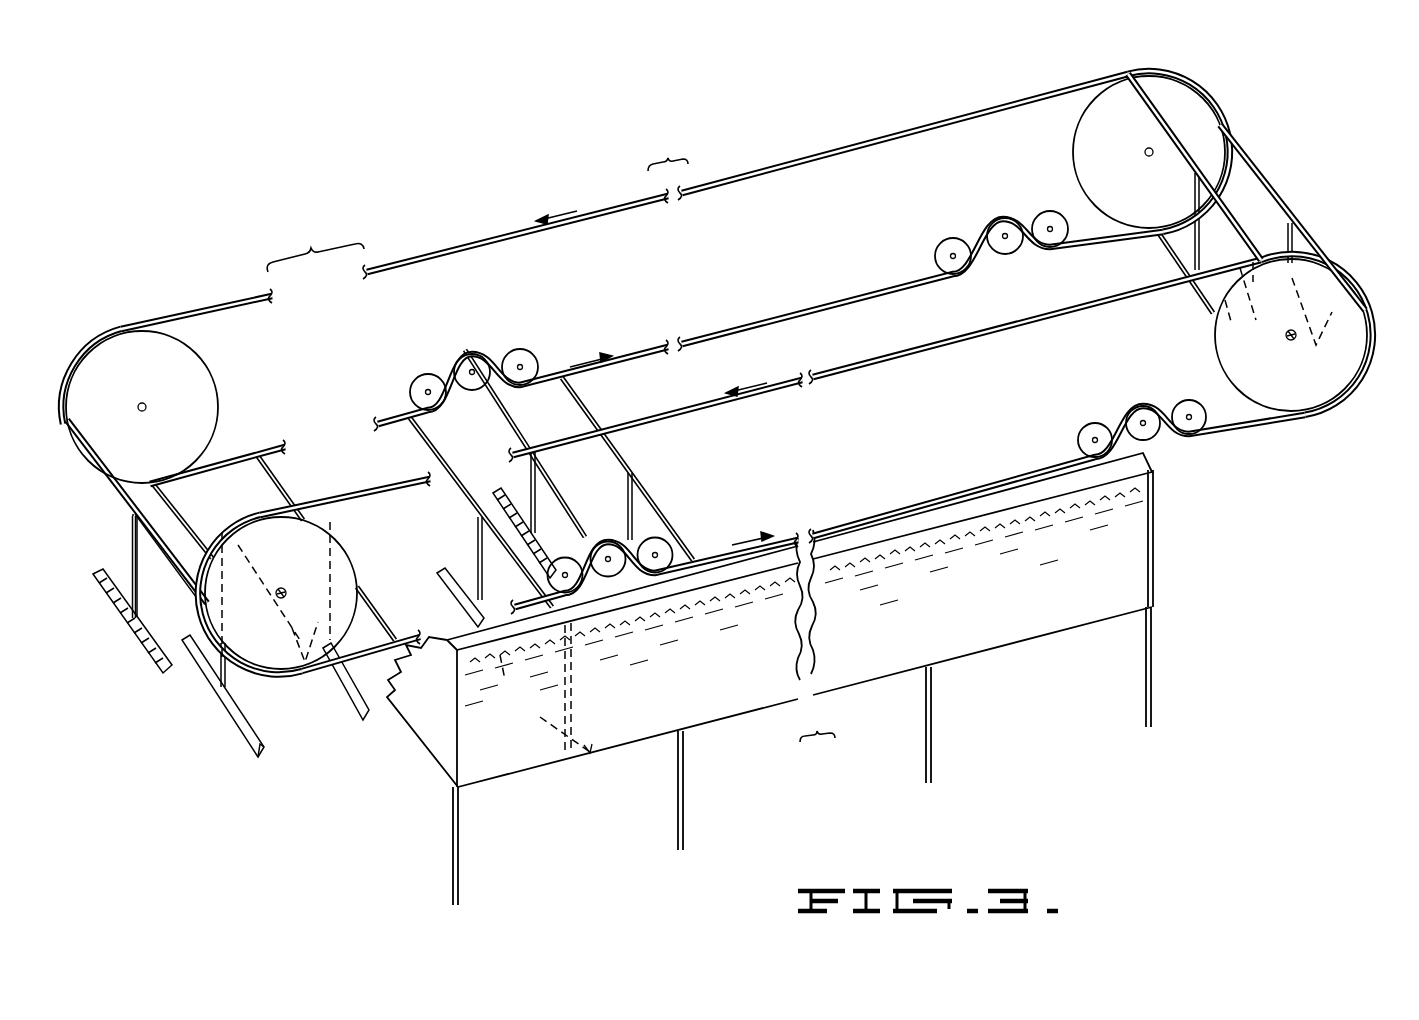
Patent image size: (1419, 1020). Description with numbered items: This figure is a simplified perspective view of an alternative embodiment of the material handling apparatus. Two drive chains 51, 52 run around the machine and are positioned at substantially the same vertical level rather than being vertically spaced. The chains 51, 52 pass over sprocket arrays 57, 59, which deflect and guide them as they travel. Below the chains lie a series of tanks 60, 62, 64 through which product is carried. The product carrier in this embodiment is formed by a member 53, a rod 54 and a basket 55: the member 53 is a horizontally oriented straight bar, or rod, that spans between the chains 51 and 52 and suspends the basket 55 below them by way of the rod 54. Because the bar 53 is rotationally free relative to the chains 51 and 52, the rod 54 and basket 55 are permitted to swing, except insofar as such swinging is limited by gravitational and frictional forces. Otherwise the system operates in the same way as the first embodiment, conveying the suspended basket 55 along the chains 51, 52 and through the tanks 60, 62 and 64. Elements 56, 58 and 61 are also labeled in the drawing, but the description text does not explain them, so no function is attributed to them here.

The drive chain 51 is at (512, 232).
The drive chain 52 is at (712, 404).
The member 53 is at (122, 497).
The rod 54 is at (131, 547).
The basket 55 is at (92, 577).
The guide rail 56 is at (157, 661).
The sprocket array 57 is at (513, 350).
The belt pulleys 58 is at (1187, 98).
The sprocket array 59 is at (1035, 215).
The tank 60 is at (505, 757).
The discharged material sheet 61 is at (590, 750).
The tank 62 is at (700, 713).
The tank 64 is at (995, 640).